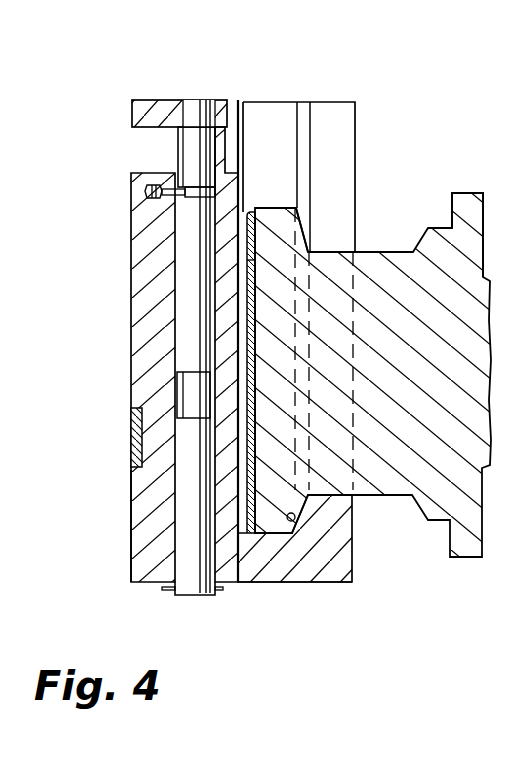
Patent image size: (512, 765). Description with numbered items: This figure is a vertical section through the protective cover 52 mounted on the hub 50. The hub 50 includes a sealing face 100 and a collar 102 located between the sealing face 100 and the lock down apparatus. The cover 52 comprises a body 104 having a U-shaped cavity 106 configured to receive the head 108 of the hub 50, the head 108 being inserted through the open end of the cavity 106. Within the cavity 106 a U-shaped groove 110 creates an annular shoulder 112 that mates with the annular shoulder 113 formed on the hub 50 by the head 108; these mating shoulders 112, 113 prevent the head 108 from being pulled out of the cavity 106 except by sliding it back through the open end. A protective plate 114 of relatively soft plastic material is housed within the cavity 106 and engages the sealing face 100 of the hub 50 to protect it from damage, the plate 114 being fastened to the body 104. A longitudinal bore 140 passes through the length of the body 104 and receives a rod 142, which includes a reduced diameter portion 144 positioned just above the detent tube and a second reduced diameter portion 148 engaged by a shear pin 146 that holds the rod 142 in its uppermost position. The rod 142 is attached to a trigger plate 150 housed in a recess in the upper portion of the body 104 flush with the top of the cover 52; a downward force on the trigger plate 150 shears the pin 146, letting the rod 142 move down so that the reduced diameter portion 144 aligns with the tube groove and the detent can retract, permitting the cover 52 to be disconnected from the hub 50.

The hub 50 is at (281, 207).
The protective cover 52 is at (133, 227).
The sealing face 100 is at (252, 207).
The collar 102 is at (466, 192).
The body 104 is at (133, 500).
The U-shaped cavity 106 is at (274, 105).
The head 108 is at (268, 560).
The U-shaped groove 110 is at (247, 560).
The annular shoulder 112 is at (299, 105).
The annular shoulder 113 is at (302, 223).
The protective plate 114 is at (248, 278).
The longitudinal bore 140 is at (206, 133).
The rod 142 is at (180, 138).
The reduced diameter portion 144 is at (190, 385).
The shear pin 146 is at (137, 192).
The second reduced diameter portion 148 is at (182, 160).
The trigger plate 150 is at (150, 100).